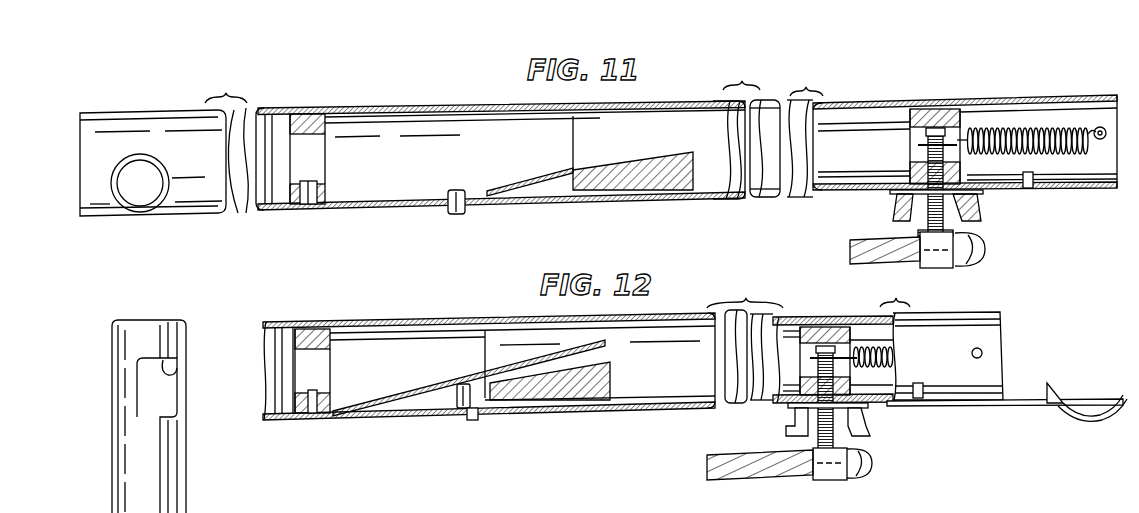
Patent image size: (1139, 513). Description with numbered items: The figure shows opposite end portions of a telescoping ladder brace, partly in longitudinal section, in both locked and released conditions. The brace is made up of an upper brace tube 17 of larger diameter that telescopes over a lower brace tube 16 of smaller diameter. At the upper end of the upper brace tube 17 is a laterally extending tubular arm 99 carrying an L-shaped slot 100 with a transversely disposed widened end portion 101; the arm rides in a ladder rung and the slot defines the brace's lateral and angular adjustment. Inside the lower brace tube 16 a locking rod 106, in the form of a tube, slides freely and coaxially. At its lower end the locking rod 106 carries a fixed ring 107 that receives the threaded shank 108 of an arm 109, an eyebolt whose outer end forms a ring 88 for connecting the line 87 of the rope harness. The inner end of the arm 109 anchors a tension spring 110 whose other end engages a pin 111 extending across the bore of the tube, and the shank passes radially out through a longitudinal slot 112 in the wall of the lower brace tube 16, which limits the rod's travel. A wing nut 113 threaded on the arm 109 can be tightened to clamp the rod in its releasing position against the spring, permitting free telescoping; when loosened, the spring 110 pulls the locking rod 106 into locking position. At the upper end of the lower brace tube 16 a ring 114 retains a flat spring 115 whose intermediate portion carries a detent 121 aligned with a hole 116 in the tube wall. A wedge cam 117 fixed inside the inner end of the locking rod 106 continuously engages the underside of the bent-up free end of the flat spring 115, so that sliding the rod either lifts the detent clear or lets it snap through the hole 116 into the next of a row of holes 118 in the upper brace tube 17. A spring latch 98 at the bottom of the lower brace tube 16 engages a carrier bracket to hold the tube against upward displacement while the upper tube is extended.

In FIG. 11, the lower brace tube 16 is at (469, 107).
In FIG. 12, the lower brace tube 16 is at (373, 341).
In FIG. 11, the upper brace tube 17 is at (418, 105).
In FIG. 12, the upper brace tube 17 is at (524, 417).
In FIG. 11, the line 87 is at (852, 250).
In FIG. 12, the line 87 is at (736, 481).
In FIG. 11, the ring 88 is at (931, 263).
In FIG. 12, the ring 88 is at (828, 482).
In FIG. 11, the releasable latching device 98 is at (1015, 194).
In FIG. 12, the releasable latching device 98 is at (1020, 408).
In FIG. 11, the tubular arm 99 is at (111, 181).
In FIG. 12, the tubular arm 99 is at (172, 338).
In FIG. 12, the L-shaped slot 100 is at (158, 472).
In FIG. 12, the widened end portion 101 is at (177, 375).
In FIG. 11, the locking rod 106 is at (692, 109).
In FIG. 12, the locking rod 106 is at (713, 316).
In FIG. 11, the fixed ring 107 is at (945, 109).
In FIG. 11, the threaded shank 108 is at (918, 145).
In FIG. 12, the threaded shank 108 is at (840, 431).
In FIG. 11, the arm 109 is at (922, 214).
In FIG. 11, the tension spring 110 is at (1068, 160).
In FIG. 12, the tension spring 110 is at (896, 357).
In FIG. 11, the pin 111 is at (1102, 141).
In FIG. 12, the pin 111 is at (986, 353).
In FIG. 11, the longitudinal slot 112 is at (866, 194).
In FIG. 12, the longitudinal slot 112 is at (878, 411).
In FIG. 11, the wing nut 113 is at (980, 219).
In FIG. 12, the wing nut 113 is at (790, 429).
In FIG. 11, the ring 114 is at (327, 134).
In FIG. 12, the ring 114 is at (334, 326).
In FIG. 11, the flat spring 115 is at (431, 192).
In FIG. 12, the flat spring 115 is at (426, 394).
In FIG. 12, the hole 116 is at (462, 412).
In FIG. 11, the wedge cam 117 is at (644, 170).
In FIG. 12, the wedge cam 117 is at (604, 381).
In FIG. 11, the holes 118 is at (287, 211).
In FIG. 12, the holes 118 is at (287, 421).
In FIG. 11, the detent 121 is at (451, 213).
In FIG. 12, the detent 121 is at (478, 421).